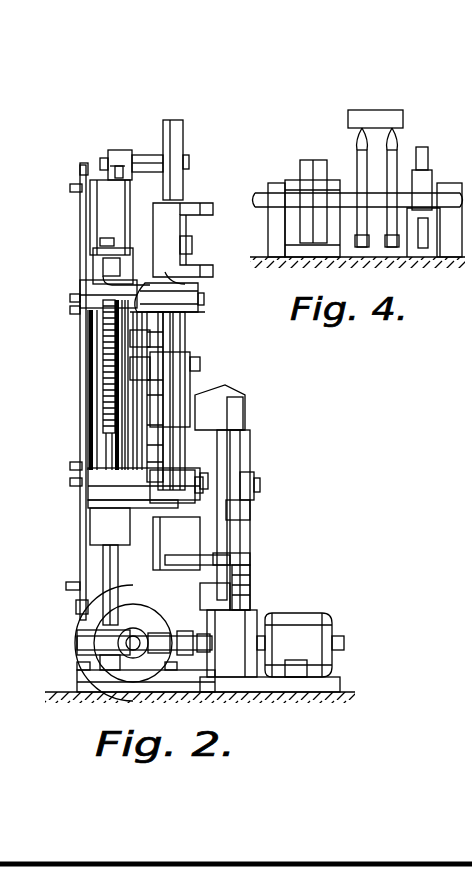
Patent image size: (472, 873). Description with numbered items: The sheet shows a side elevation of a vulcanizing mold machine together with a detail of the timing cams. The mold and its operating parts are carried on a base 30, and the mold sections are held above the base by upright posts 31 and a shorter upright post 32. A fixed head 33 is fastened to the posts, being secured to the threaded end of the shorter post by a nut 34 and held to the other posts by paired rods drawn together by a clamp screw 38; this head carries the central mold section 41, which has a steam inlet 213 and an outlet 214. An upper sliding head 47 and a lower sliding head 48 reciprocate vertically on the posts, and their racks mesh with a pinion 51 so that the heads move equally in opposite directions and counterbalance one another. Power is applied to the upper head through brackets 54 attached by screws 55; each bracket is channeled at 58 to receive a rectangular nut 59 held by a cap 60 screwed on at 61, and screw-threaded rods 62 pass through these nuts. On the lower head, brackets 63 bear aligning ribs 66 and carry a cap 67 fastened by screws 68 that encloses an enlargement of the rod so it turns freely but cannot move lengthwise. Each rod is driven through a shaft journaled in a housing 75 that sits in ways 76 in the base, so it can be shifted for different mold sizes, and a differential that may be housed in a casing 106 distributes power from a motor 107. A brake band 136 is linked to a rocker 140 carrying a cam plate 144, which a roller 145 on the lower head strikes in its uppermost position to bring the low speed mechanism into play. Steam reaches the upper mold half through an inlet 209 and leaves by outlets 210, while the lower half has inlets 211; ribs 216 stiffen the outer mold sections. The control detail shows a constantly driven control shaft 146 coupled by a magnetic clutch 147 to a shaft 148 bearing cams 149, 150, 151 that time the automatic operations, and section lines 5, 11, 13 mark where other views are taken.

In FIG. 2, the base 5 is at (5, 627).
In FIG. 2, the section line 11 is at (205, 390).
In FIG. 2, the section line 13 is at (255, 476).
In FIG. 2, the base 30 is at (322, 691).
In FIG. 2, the upright posts 31 is at (183, 200).
In FIG. 2, the shorter upright post 32 is at (235, 446).
In FIG. 2, the fixed head 33 is at (195, 396).
In FIG. 2, the nut 34 is at (228, 398).
In FIG. 2, the clamp screw 38 is at (203, 363).
In FIG. 2, the central mold section 41 is at (85, 373).
In FIG. 2, the upper sliding head 47 is at (182, 229).
In FIG. 2, the lower sliding head 48 is at (220, 537).
In FIG. 2, the pinion 51 is at (188, 273).
In FIG. 2, the brackets 54 is at (202, 292).
In FIG. 2, the screws 55 is at (184, 259).
In FIG. 2, the channel 58 is at (88, 287).
In FIG. 2, the rectangular nut 59 is at (108, 270).
In FIG. 2, the cap 60 is at (100, 258).
In FIG. 2, the screws 61 is at (100, 243).
In FIG. 2, the screw-threaded rods 62 is at (103, 419).
In FIG. 2, the brackets 63 is at (90, 496).
In FIG. 2, the aligning ribs 66 is at (90, 507).
In FIG. 2, the cap 67 is at (98, 523).
In FIG. 2, the screws 68 is at (95, 549).
In FIG. 2, the housing 75 is at (95, 663).
In FIG. 2, the ways 76 is at (82, 679).
In FIG. 2, the casing 106 is at (85, 609).
In FIG. 2, the motor 107 is at (290, 625).
In FIG. 2, the brake band 136 is at (240, 632).
In FIG. 2, the rocker 140 is at (248, 520).
In FIG. 2, the cam plate 144 is at (252, 502).
In FIG. 2, the roller 145 is at (225, 557).
In FIG. 4, the control shaft 146 is at (258, 190).
In FIG. 4, the magnetic clutch 147 is at (310, 165).
In FIG. 4, the shaft 148 is at (375, 195).
In FIG. 4, the cam 149 is at (366, 250).
In FIG. 4, the cam 150 is at (392, 246).
In FIG. 4, the cam 151 is at (436, 230).
In FIG. 2, the inlet 209 is at (72, 185).
In FIG. 2, the outlets 210 is at (76, 312).
In FIG. 2, the inlets 211 is at (75, 465).
In FIG. 2, the inlet 213 is at (76, 300).
In FIG. 2, the outlet 214 is at (80, 483).
In FIG. 2, the ribs 216 is at (87, 163).